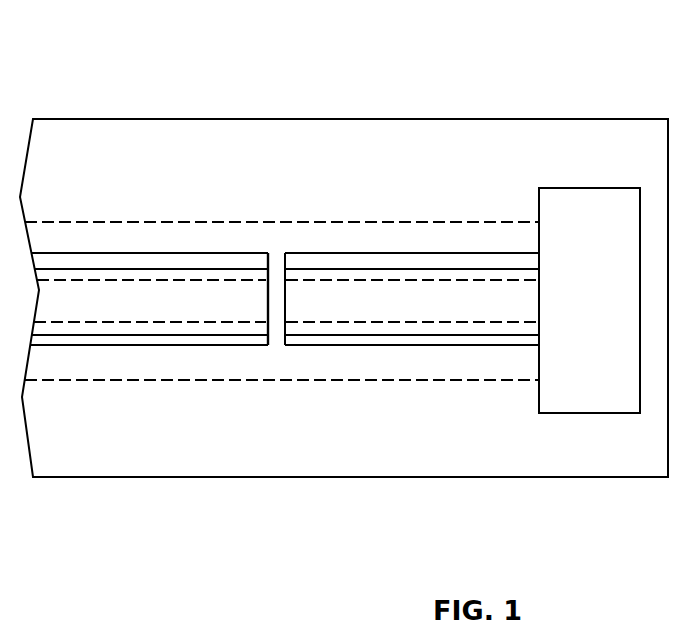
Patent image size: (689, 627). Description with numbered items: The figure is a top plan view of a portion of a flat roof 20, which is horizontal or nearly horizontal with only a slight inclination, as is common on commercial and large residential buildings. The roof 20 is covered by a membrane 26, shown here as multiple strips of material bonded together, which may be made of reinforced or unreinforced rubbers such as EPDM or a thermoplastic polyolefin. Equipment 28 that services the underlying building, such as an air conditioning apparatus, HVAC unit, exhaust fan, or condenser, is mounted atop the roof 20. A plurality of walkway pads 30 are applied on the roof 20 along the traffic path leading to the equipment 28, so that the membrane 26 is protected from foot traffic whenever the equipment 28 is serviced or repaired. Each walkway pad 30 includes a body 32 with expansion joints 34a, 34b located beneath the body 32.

The flat roof 20 is at (135, 106).
The membrane 26 is at (190, 358).
The equipment 28 is at (590, 403).
The walkway pad 30 is at (330, 300).
The body 32 is at (482, 302).
The expansion joint 34a is at (490, 258).
The expansion joint 34b is at (365, 340).